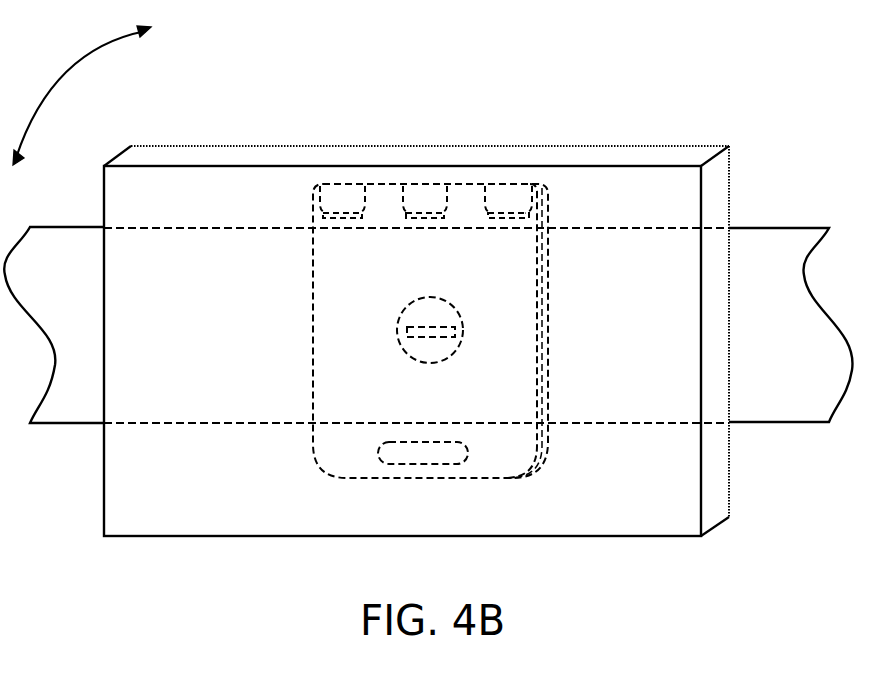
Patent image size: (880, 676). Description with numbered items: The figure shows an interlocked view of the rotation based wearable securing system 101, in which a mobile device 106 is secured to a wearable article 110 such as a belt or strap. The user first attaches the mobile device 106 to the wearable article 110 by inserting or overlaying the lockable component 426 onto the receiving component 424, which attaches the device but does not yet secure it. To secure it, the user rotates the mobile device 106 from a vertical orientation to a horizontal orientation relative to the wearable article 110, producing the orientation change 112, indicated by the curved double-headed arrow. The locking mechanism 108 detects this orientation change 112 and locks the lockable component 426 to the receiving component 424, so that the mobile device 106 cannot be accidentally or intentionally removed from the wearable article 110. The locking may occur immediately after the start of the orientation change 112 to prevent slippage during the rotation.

The rotation based wearable securing system 101 is at (777, 49).
The mobile device 106 is at (648, 146).
The locking mechanism 108 is at (402, 317).
The wearable article 110 is at (780, 228).
The orientation change 112 is at (61, 72).
The receiving component 424 is at (507, 183).
The lockable component 426 is at (312, 342).